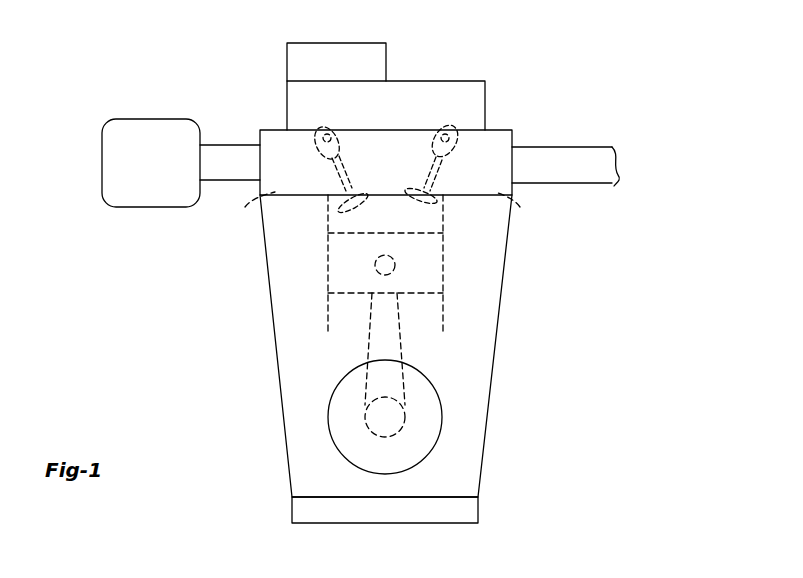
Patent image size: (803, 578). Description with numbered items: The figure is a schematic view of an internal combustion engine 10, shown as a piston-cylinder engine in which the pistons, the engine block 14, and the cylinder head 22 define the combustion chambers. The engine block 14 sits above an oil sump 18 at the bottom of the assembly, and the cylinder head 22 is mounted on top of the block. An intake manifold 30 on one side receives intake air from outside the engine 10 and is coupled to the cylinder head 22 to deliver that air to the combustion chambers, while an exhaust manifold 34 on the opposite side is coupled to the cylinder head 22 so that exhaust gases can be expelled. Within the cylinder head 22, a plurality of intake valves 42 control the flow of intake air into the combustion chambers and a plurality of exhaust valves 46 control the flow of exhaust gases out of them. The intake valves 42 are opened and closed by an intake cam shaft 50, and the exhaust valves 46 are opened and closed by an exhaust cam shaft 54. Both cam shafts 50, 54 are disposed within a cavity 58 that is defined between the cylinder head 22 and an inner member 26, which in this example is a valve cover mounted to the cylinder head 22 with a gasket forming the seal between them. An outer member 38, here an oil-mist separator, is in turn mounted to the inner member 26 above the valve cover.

The internal combustion engine 10 is at (638, 287).
The engine block 14 is at (465, 383).
The oil sump 18 is at (466, 512).
The cylinder head 22 is at (493, 150).
The inner member 26 is at (466, 92).
The intake manifold 30 is at (115, 163).
The exhaust manifold 34 is at (585, 158).
The outer member 38 is at (298, 63).
The intake valves 42 is at (340, 206).
The exhaust valves 46 is at (440, 194).
The intake cam shaft 50 is at (327, 126).
The exhaust cam shaft 54 is at (445, 122).
The cavity 58 is at (405, 120).